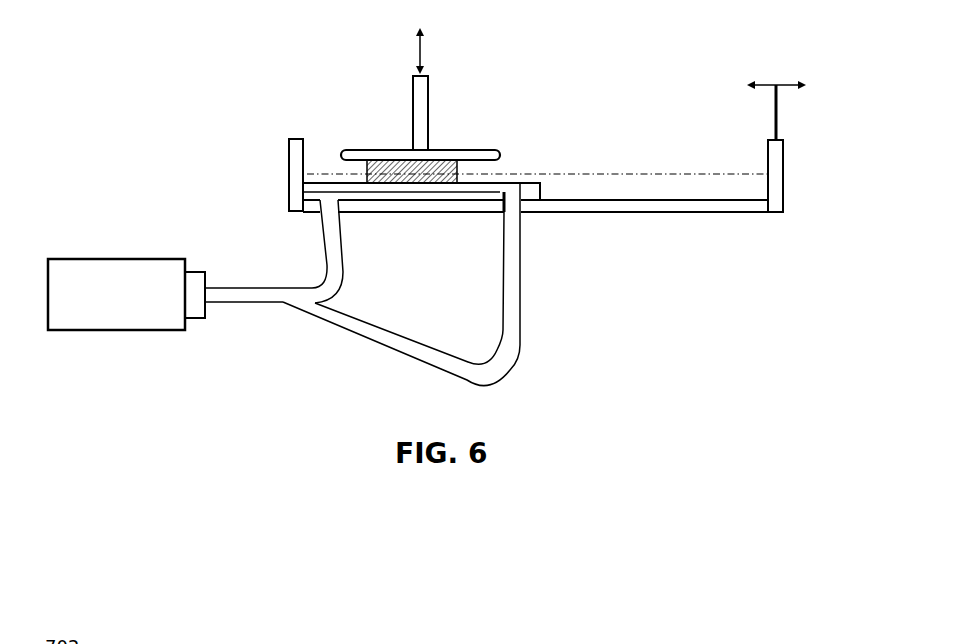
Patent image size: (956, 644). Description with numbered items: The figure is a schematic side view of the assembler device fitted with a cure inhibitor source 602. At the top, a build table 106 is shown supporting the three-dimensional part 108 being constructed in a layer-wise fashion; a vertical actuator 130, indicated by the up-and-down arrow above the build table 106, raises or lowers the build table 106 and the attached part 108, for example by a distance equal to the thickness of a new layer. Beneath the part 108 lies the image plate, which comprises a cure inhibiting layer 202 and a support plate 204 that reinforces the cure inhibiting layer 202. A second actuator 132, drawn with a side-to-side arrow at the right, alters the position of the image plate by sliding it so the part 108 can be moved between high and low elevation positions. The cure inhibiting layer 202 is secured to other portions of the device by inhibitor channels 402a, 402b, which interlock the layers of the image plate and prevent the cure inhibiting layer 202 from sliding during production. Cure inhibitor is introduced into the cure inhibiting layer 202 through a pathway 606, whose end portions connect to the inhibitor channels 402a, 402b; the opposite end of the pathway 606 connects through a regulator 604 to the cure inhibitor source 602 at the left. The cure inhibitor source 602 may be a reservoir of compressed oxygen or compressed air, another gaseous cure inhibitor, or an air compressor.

The build table 106 is at (476, 150).
The three-dimensional part 108 is at (366, 170).
The vertical actuator 130 is at (426, 53).
The actuator 132 is at (778, 123).
The cure inhibiting layer 202 is at (467, 183).
The support plate 204 is at (533, 194).
The inhibitor channel 402a is at (327, 207).
The inhibitor channel 402b is at (513, 205).
The cure inhibitor source 602 is at (155, 273).
The regulator 604 is at (198, 308).
The pathway 606 is at (510, 312).